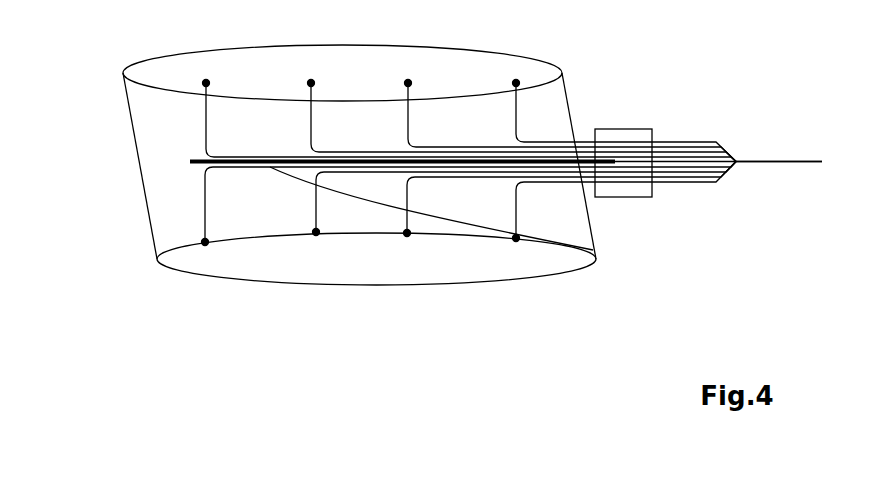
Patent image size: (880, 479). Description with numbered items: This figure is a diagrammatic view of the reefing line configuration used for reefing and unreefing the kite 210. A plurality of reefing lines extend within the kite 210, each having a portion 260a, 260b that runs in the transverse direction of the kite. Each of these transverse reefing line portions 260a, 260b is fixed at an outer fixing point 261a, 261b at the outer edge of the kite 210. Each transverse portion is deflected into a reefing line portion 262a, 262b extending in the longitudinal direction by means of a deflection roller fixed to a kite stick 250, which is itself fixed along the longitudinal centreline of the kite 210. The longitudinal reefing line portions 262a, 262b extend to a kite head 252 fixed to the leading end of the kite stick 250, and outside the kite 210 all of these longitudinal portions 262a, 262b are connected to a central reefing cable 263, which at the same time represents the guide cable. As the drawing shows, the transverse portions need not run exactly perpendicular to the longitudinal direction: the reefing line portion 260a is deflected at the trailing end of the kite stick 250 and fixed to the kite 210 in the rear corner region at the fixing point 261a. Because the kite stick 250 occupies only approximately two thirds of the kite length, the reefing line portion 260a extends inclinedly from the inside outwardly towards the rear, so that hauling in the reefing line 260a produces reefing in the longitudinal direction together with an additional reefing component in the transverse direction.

The kite 210 is at (157, 137).
The kite stick 250 is at (190, 161).
The kite head 252 is at (620, 197).
The central reefing cable 263 is at (783, 162).
The reefing line portion 260a is at (205, 213).
The outer fixing point 261a is at (205, 242).
The reefing line portion 260b is at (315, 207).
The outer fixing point 261b is at (316, 232).
The reefing line portion 262a is at (463, 232).
The reefing line portion 262b is at (378, 173).